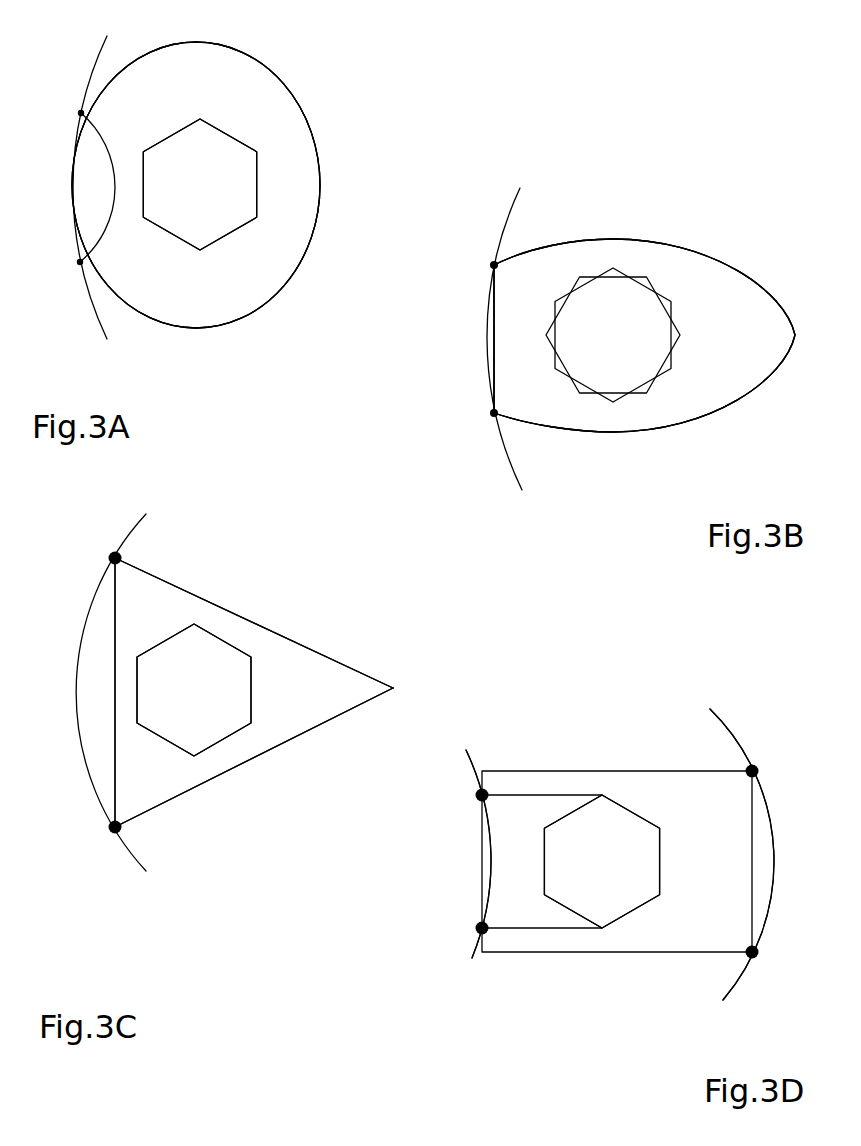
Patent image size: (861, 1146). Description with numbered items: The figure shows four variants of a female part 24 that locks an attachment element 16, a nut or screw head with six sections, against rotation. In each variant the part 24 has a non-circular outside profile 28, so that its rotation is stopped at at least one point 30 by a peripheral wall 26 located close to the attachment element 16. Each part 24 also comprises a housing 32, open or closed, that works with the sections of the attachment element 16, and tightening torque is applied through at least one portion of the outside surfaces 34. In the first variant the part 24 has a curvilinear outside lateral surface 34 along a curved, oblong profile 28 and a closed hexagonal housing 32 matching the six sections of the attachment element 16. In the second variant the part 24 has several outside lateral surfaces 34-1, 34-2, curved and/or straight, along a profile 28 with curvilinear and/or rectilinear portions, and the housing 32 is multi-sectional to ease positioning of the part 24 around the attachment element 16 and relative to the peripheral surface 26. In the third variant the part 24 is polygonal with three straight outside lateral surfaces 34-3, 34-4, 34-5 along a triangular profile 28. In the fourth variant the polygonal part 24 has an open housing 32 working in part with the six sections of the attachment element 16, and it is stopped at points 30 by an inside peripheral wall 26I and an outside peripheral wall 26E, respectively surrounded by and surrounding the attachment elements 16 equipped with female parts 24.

In FIG. 3A, the attachment element 16 is at (186, 197).
In FIG. 3B, the attachment element 16 is at (620, 378).
In FIG. 3C, the attachment element 16 is at (185, 716).
In FIG. 3D, the attachment element 16 is at (603, 894).
In FIG. 3A, the female part 24 is at (269, 258).
In FIG. 3B, the female part 24 is at (567, 263).
In FIG. 3C, the female part 24 is at (254, 692).
In FIG. 3D, the female part 24 is at (673, 778).
In FIG. 3A, the peripheral wall 26 is at (97, 315).
In FIG. 3B, the peripheral wall 26 is at (512, 474).
In FIG. 3C, the peripheral wall 26 is at (132, 869).
In FIG. 3D, the peripheral wall 26 is at (470, 770).
In FIG. 3D, the outside peripheral wall 26E is at (752, 771).
In FIG. 3D, the inside peripheral wall 26I is at (482, 928).
In FIG. 3A, the outside profile 28 is at (297, 97).
In FIG. 3B, the outside profile 28 is at (710, 256).
In FIG. 3A, the point 30 is at (81, 113).
In FIG. 3B, the point 30 is at (494, 265).
In FIG. 3C, the point 30 is at (115, 558).
In FIG. 3D, the point 30 is at (482, 795).
In FIG. 3A, the housing 32 is at (222, 133).
In FIG. 3B, the housing 32 is at (648, 279).
In FIG. 3C, the housing 32 is at (220, 637).
In FIG. 3D, the housing 32 is at (556, 797).
In FIG. 3A, the outside lateral surface 34 is at (319, 172).
In FIG. 3B, the outside lateral surface 34-1 is at (494, 340).
In FIG. 3B, the outside lateral surface 34-2 is at (772, 383).
In FIG. 3C, the straight outside lateral surface 34-3 is at (322, 729).
In FIG. 3C, the straight outside lateral surface 34-4 is at (346, 665).
In FIG. 3C, the straight outside lateral surface 34-5 is at (115, 745).